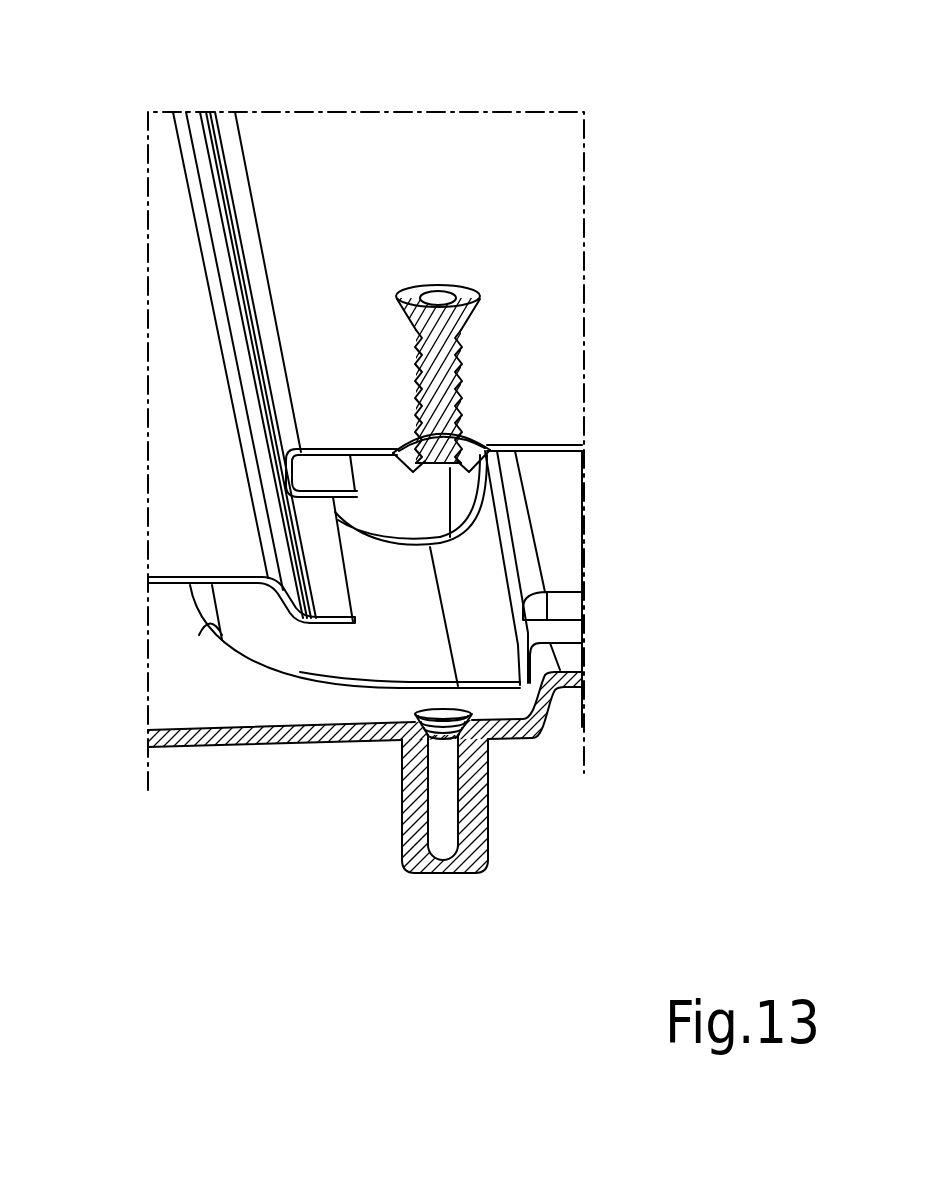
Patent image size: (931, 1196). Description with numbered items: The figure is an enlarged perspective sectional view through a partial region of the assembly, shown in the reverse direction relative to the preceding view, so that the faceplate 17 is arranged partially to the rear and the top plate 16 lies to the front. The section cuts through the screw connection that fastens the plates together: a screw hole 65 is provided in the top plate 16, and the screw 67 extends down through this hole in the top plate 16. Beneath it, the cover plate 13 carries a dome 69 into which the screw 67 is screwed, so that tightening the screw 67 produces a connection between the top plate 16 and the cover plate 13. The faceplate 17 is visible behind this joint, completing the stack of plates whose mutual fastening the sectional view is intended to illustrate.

The cover plate 13 is at (305, 751).
The top plate 16 is at (482, 135).
The faceplate 17 is at (175, 400).
The screw hole 65 is at (409, 432).
The screw 67 is at (440, 360).
The dome 69 is at (470, 858).